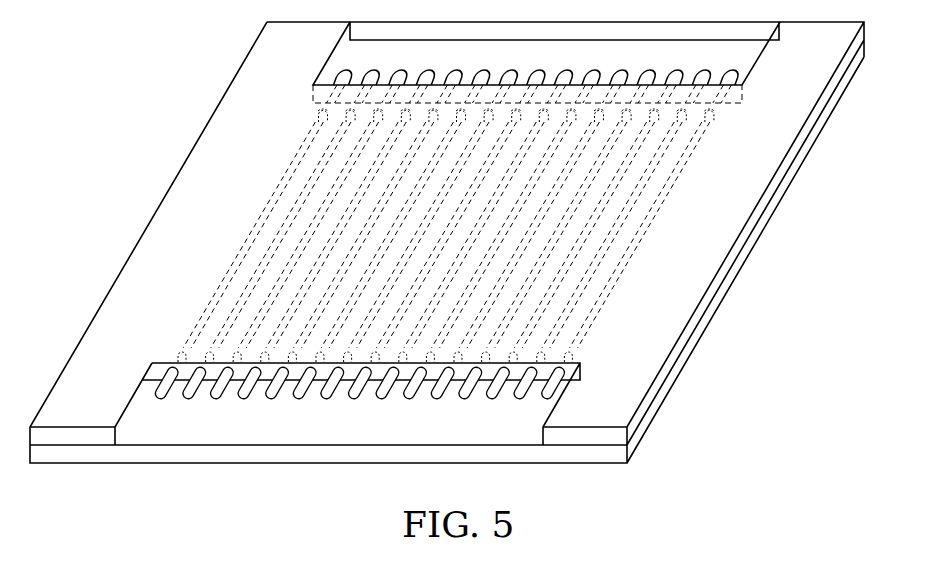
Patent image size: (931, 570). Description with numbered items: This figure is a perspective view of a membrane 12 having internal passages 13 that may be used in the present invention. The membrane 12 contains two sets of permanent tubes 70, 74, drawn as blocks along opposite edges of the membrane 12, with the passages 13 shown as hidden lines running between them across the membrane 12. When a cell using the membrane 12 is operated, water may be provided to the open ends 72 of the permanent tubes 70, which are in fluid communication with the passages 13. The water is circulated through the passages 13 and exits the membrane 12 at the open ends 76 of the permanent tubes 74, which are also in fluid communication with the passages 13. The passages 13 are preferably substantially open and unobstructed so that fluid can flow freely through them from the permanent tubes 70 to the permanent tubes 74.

The membrane 12 is at (118, 66).
The internal passages 13 is at (340, 222).
The permanent tubes 70 is at (318, 110).
The open ends 72 is at (482, 72).
The permanent tubes 74 is at (174, 378).
The open ends 76 is at (297, 396).